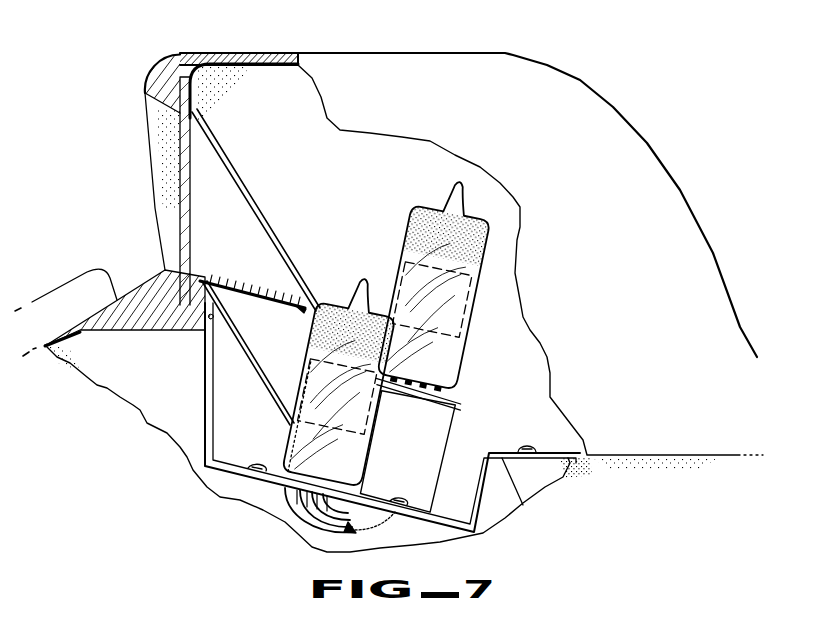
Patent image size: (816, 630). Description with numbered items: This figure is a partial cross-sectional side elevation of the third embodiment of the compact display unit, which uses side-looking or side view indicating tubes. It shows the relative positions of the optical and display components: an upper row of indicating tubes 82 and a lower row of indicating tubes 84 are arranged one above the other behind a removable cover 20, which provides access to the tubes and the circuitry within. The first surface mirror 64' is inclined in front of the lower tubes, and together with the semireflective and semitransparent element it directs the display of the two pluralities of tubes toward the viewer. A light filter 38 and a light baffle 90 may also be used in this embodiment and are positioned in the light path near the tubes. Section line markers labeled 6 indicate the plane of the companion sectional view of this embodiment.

The deck panel 20 is at (270, 58).
The section line 6- 6 is at (340, 151).
The battery 82 is at (408, 212).
The battery 84 is at (338, 300).
The serrated bar 90 is at (230, 277).
The end of bar 38 is at (290, 311).
The brace member 64' is at (248, 353).